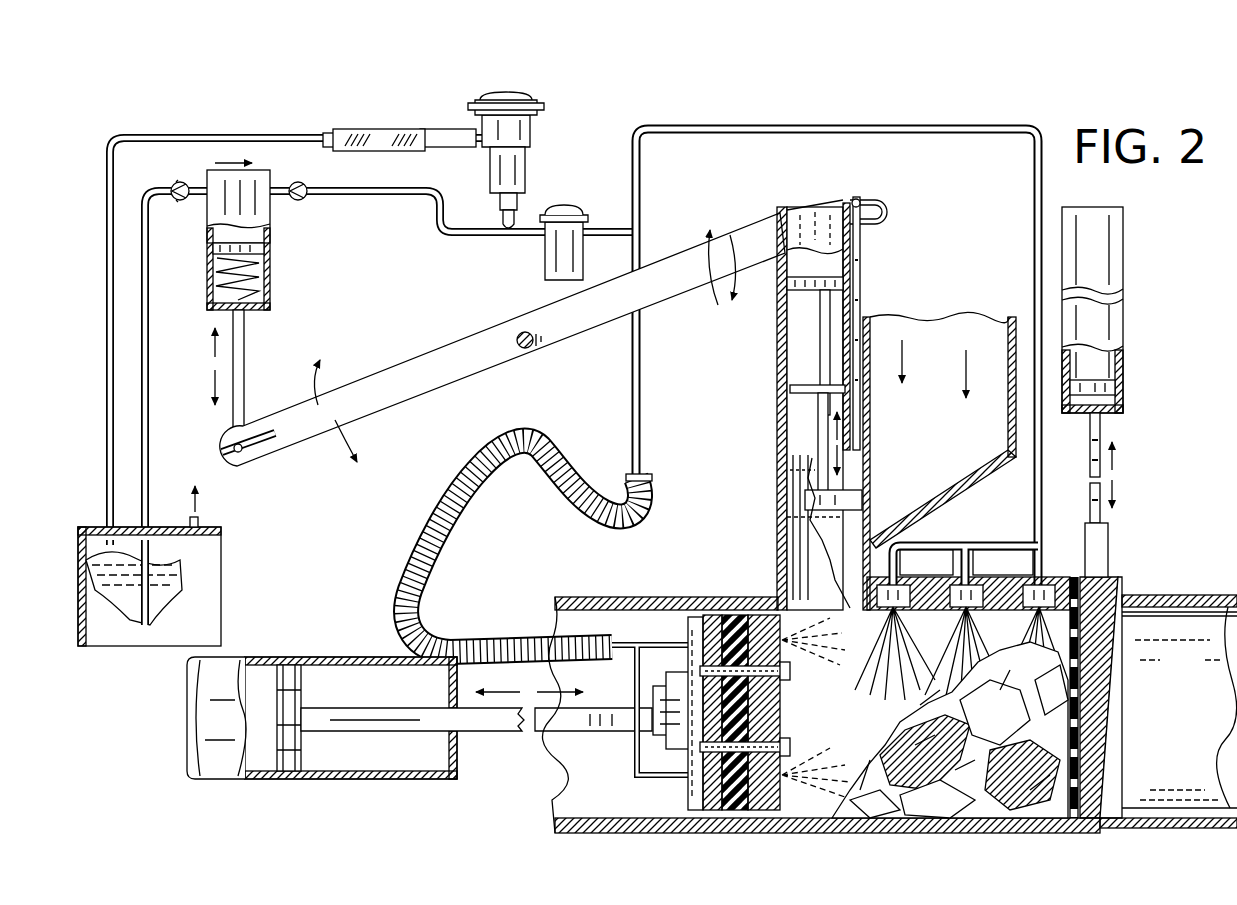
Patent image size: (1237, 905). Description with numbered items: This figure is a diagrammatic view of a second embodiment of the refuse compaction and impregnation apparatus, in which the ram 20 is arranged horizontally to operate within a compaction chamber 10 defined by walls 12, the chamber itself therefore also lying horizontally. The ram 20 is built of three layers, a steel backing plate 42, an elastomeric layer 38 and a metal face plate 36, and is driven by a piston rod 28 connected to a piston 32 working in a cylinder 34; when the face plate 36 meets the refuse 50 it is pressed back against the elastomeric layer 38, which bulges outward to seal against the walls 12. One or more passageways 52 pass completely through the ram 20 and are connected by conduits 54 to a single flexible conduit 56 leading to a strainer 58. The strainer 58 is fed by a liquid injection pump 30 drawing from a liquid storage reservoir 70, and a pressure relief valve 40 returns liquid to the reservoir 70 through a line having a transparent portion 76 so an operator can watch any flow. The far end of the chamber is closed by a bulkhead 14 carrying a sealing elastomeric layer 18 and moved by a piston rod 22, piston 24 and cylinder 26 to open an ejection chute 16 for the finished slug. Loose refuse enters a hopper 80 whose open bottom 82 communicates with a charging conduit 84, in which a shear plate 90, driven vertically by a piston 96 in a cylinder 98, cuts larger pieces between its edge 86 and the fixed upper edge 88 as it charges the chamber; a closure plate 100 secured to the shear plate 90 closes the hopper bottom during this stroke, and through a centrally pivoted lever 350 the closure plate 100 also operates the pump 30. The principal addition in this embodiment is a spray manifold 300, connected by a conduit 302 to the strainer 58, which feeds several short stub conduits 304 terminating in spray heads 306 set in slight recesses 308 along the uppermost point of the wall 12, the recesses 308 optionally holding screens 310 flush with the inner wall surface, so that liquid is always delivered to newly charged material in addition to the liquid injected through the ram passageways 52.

The compaction chamber 10 is at (897, 701).
The walls 12 is at (1071, 580).
The bulkhead 14 is at (1115, 712).
The ejection chute 16 is at (1192, 668).
The elastomeric layer 18 is at (1080, 750).
The ram 20 is at (789, 722).
The piston rod 22 is at (1106, 447).
The piston 24 is at (1122, 392).
The cylinder 26 is at (1122, 325).
The piston rod 28 is at (480, 733).
The liquid injection pump 30 is at (274, 273).
The piston 32 is at (291, 775).
The cylinder 34 is at (217, 778).
The face plate 36 is at (757, 612).
The elastomeric layer 38 is at (724, 612).
The pressure relief valve 40 is at (533, 145).
The steel backing plate 42 is at (692, 625).
The refuse 50 is at (965, 818).
The passageways 52 is at (790, 655).
The conduits 54 is at (636, 752).
The flexible conduit 56 is at (470, 530).
The strainer 58 is at (545, 255).
The liquid storage reservoir 70 is at (224, 576).
The transparent portion 76 is at (374, 130).
The hopper 80 is at (952, 427).
The open bottom 82 is at (856, 470).
The charging conduit 84 is at (795, 549).
The edge 86 is at (864, 512).
The upper edge 88 is at (846, 602).
The shear plate 90 is at (788, 518).
The piston 96 is at (788, 300).
The cylinder 98 is at (788, 360).
The closure plate 100 is at (860, 300).
The spray manifold 300 is at (969, 544).
The conduit 302 is at (1033, 240).
The stub conduits 304 is at (957, 552).
The spray heads 306 is at (966, 563).
The recesses 308 is at (947, 642).
The screens 310 is at (960, 645).
The lever 350 is at (457, 347).